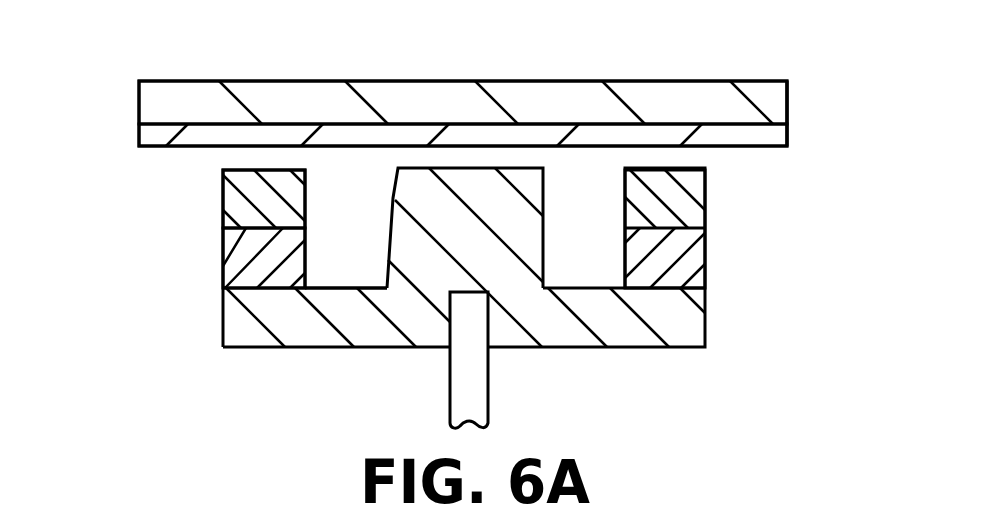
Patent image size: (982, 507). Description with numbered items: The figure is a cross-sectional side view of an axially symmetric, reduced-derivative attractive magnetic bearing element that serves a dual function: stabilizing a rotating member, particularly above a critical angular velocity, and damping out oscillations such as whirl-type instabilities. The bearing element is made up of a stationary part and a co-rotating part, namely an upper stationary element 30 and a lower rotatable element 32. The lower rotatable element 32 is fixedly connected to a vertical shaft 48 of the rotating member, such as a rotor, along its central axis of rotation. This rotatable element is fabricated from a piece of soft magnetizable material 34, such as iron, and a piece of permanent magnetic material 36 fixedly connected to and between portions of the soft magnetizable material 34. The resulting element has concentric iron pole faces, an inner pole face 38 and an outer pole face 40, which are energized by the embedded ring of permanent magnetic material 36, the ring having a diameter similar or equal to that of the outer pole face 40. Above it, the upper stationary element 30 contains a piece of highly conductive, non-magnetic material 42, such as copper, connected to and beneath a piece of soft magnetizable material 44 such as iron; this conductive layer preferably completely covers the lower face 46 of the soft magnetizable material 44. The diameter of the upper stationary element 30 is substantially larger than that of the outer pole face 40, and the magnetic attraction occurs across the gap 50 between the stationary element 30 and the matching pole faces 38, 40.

The upper stationary element 30 is at (168, 39).
The lower rotatable element 32 is at (160, 283).
The soft magnetizable material 34 is at (223, 202).
The permanent magnetic material 36 is at (223, 261).
The inner pole face 38 is at (478, 168).
The outer pole face 40 is at (671, 168).
The highly conductive, non-magnetic material 42 is at (139, 141).
The soft magnetizable material 44 is at (139, 98).
The lower face 46 is at (750, 147).
The vertical shaft 48 is at (488, 373).
The gap 50 is at (395, 184).